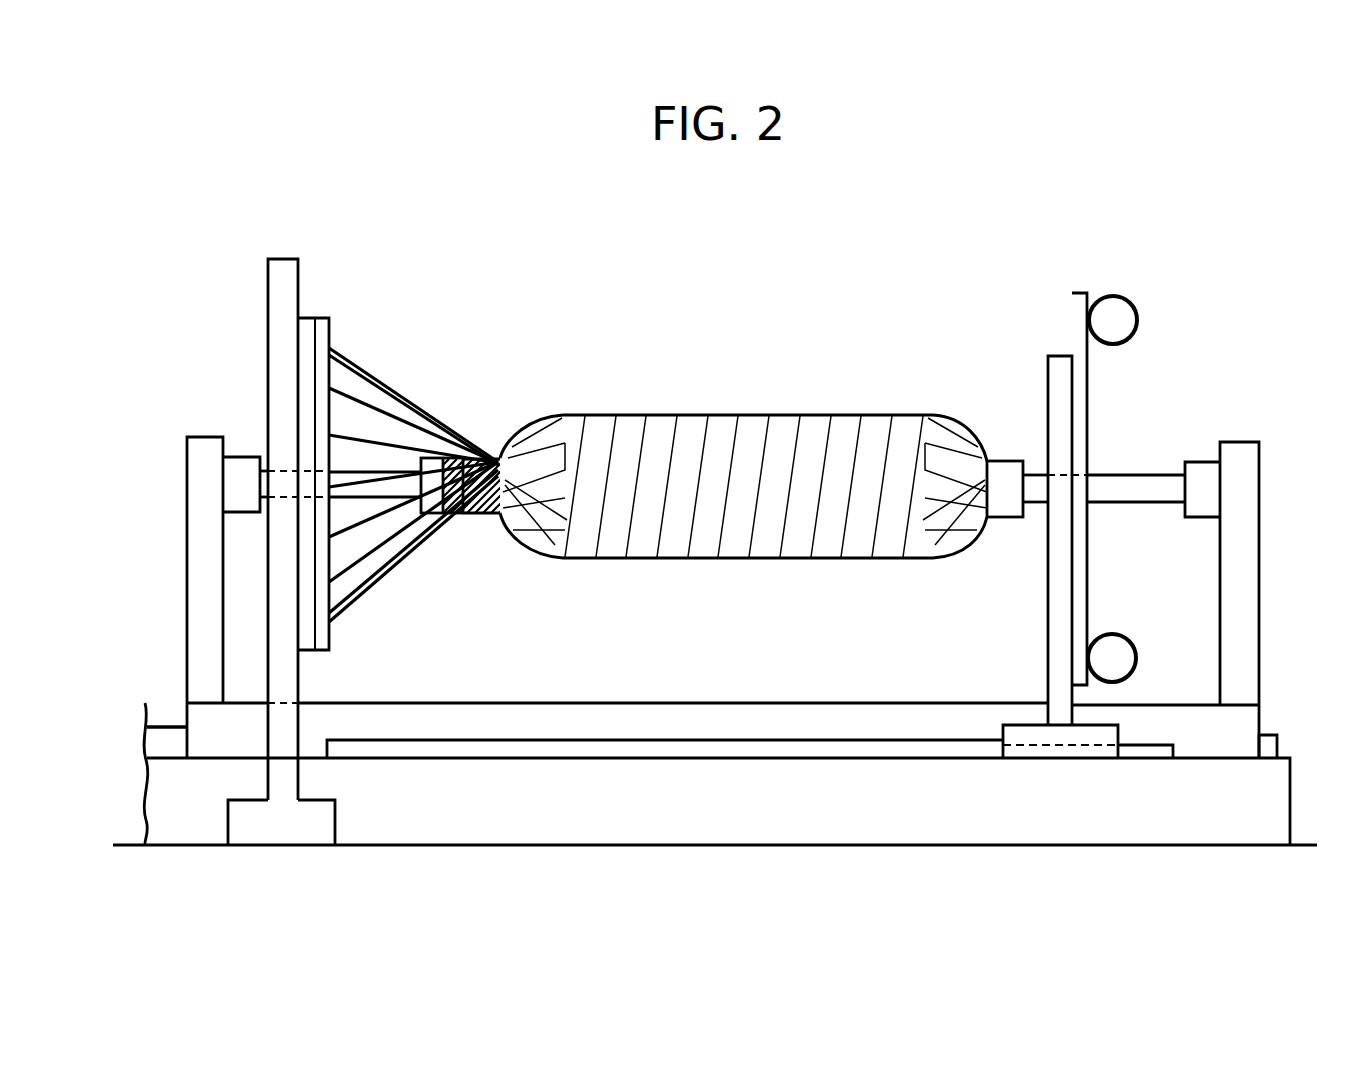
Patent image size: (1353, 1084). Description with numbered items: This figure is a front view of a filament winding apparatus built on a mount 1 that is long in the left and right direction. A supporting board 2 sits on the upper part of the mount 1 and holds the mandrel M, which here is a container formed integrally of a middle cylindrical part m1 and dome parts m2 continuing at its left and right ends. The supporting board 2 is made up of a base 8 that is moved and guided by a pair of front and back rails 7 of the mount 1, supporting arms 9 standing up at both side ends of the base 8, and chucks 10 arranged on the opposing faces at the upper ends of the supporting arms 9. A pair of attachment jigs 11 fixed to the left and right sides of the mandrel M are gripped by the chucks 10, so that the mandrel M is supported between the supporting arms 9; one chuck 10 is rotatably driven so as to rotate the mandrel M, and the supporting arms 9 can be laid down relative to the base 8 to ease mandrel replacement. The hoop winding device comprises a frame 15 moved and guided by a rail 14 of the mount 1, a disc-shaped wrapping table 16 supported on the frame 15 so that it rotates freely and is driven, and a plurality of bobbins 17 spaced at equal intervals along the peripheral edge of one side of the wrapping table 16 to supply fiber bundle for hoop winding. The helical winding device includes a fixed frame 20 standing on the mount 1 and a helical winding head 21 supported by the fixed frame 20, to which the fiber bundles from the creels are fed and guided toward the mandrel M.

The mount 1 is at (705, 846).
The supporting board 2 is at (170, 598).
The rails 7 is at (167, 727).
The base 8 is at (551, 718).
The supporting arms 9 is at (187, 493).
The chucks 10 is at (242, 457).
The attachment jigs 11 is at (388, 498).
The rail 14 is at (679, 740).
The frame 15 is at (1048, 622).
The wrapping table 16 is at (1090, 583).
The bobbins 17 is at (1138, 318).
The fixed frame 20 is at (268, 780).
The helical winding head 21 is at (309, 318).
The mandrel M is at (782, 416).
The middle cylindrical part m1 is at (695, 416).
The dome parts m2 is at (531, 416).